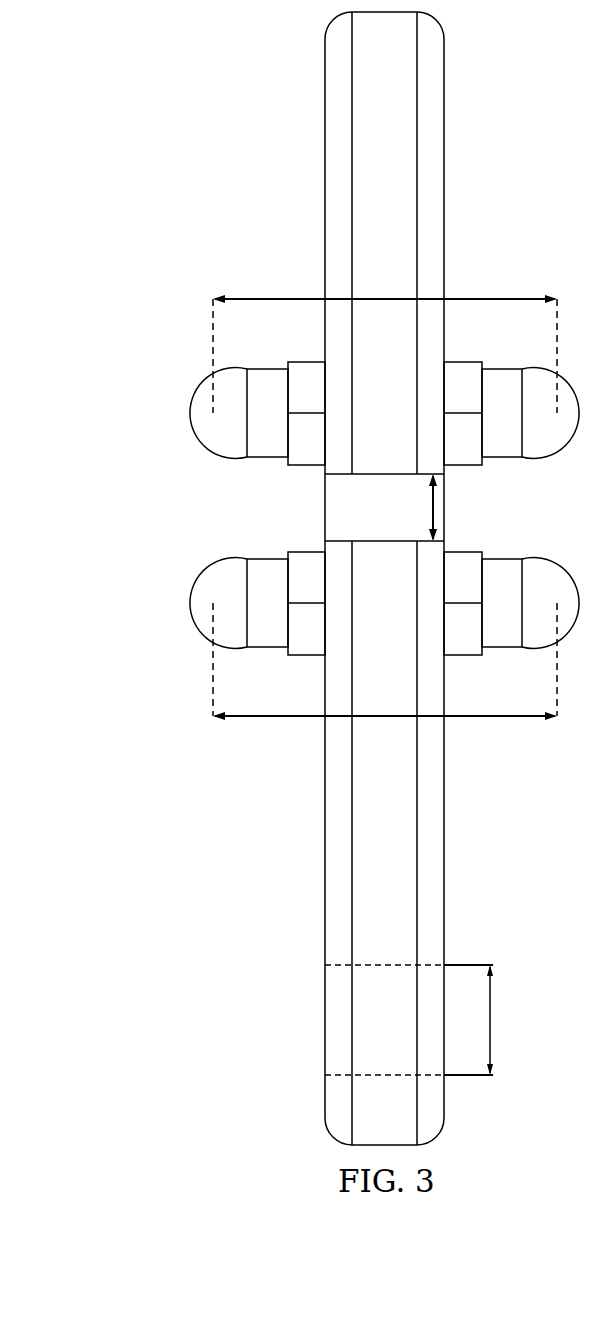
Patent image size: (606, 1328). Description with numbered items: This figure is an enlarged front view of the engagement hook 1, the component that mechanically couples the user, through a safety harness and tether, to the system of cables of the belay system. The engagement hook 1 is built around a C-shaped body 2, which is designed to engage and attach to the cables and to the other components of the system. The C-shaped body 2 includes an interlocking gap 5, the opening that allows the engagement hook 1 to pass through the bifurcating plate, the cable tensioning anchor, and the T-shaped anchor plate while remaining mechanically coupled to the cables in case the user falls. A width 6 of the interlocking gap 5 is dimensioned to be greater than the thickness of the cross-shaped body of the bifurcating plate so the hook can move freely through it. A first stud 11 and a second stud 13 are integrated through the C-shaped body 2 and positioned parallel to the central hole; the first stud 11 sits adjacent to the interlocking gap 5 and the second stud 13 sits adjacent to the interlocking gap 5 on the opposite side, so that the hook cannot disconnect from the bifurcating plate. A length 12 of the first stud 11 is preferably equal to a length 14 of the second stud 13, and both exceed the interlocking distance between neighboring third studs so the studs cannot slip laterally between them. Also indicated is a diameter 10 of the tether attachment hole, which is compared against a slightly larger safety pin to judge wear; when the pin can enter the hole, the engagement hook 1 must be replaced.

The engagement hook 1 is at (180, 101).
The C-shaped body 2 is at (435, 73).
The interlocking gap 5 is at (318, 508).
The width of the interlocking gap 6 is at (435, 507).
The diameter of the tether attachment hole 10 is at (493, 1000).
The first stud 11 is at (487, 374).
The length of the first stud 12 is at (264, 298).
The second stud 13 is at (527, 571).
The length of the second stud 14 is at (247, 715).